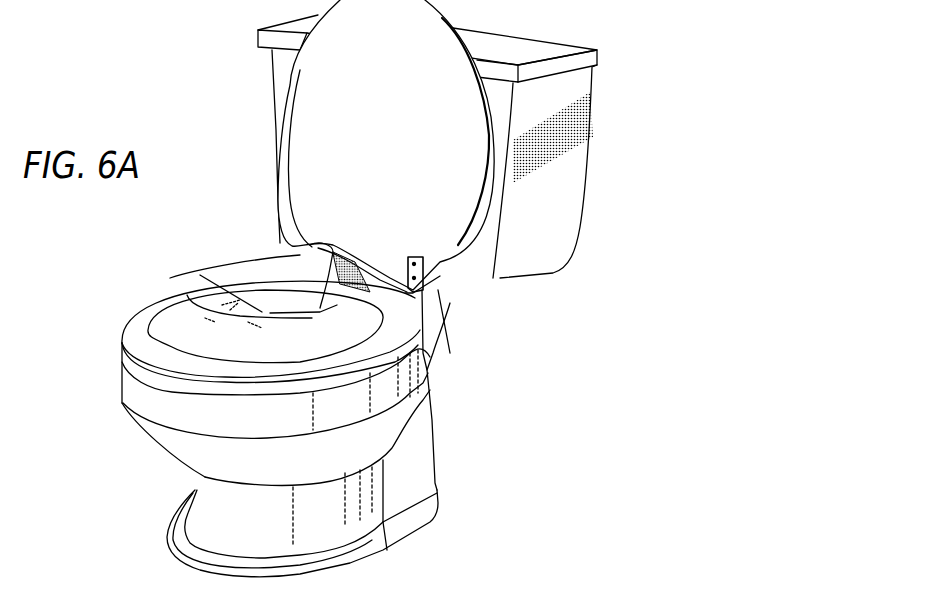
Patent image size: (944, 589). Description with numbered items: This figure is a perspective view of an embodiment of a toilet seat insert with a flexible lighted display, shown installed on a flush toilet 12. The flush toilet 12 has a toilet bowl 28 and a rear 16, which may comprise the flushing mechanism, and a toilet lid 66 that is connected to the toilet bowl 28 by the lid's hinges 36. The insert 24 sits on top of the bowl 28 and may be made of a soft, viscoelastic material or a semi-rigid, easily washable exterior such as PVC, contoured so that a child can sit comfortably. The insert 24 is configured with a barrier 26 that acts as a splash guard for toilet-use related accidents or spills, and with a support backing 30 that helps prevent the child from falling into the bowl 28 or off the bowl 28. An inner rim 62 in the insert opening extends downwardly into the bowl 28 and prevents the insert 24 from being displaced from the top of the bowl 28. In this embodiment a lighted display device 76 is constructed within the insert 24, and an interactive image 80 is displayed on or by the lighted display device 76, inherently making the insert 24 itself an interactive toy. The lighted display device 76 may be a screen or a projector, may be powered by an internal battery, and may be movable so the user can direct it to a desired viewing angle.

The flush toilet 12 is at (425, 437).
The rear 16 is at (447, 303).
The insert 24 is at (422, 295).
The barrier 26 is at (312, 277).
The toilet bowl 28 is at (177, 448).
The support backing 30 is at (187, 325).
The lid's hinges 36 is at (428, 276).
The inner rim 62 is at (305, 247).
The toilet lid 66 is at (290, 143).
The lighted display device 76 is at (405, 293).
The interactive image 80 is at (350, 254).